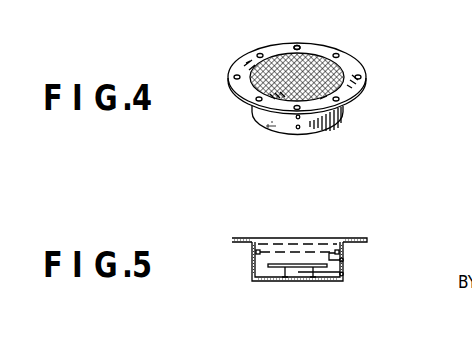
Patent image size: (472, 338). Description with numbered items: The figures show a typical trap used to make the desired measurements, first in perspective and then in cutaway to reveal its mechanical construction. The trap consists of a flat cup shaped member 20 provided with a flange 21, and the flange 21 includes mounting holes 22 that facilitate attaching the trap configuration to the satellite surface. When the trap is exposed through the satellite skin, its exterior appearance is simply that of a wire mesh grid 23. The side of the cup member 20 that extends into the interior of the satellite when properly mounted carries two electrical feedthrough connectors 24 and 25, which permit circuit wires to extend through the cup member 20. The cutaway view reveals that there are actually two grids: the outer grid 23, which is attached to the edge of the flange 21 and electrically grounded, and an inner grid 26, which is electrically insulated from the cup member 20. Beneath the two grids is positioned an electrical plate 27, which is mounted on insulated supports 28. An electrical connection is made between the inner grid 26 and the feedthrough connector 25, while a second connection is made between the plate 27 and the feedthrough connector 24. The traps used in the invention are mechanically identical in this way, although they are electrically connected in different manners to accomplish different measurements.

In FIG. 4, the cup shaped member 20 is at (264, 118).
In FIG. 5, the cup shaped member 20 is at (253, 262).
In FIG. 4, the flange 21 is at (242, 93).
In FIG. 5, the flange 21 is at (358, 238).
In FIG. 4, the mounting holes 22 is at (299, 46).
In FIG. 4, the wire mesh grid 23 is at (340, 61).
In FIG. 5, the wire mesh grid 23 is at (302, 243).
In FIG. 4, the electrical feedthrough connector 24 is at (298, 129).
In FIG. 5, the electrical feedthrough connector 24 is at (344, 274).
In FIG. 4, the electrical feedthrough connector 25 is at (299, 119).
In FIG. 5, the electrical feedthrough connector 25 is at (344, 260).
In FIG. 5, the inner grid 26 is at (282, 251).
In FIG. 5, the electrical plate 27 is at (278, 268).
In FIG. 5, the insulated supports 28 is at (306, 278).